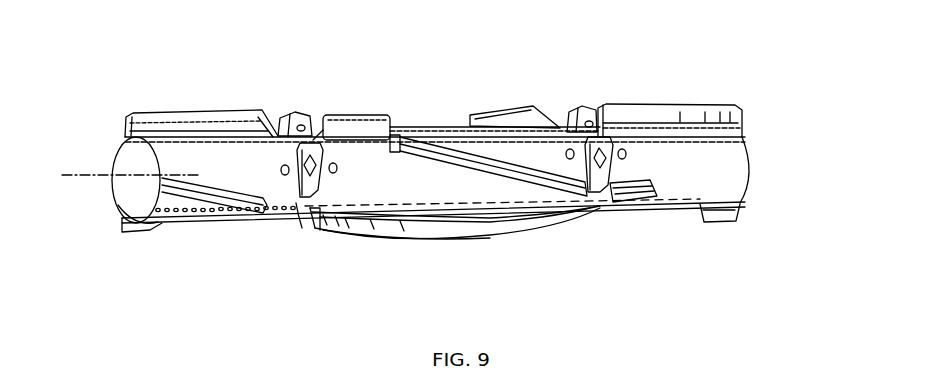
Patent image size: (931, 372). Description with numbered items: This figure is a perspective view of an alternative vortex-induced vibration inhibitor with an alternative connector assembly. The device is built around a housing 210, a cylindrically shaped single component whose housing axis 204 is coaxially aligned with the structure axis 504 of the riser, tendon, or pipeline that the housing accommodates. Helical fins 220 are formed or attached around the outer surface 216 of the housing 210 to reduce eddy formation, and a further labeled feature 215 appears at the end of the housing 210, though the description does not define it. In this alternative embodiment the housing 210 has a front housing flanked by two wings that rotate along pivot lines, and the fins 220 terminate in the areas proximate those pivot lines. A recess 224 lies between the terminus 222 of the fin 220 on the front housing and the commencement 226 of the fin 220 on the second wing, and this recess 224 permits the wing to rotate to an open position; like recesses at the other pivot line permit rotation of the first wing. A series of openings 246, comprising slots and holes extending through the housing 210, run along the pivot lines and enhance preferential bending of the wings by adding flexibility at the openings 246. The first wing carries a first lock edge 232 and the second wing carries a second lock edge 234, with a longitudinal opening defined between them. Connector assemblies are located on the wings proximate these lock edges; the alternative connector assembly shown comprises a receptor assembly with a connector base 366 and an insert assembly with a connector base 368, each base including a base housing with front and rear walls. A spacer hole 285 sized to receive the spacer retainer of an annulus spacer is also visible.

The housing axis 204 is at (91, 178).
The housing 210 is at (732, 162).
The end portion 215 is at (125, 192).
The outer surface 216 is at (162, 143).
The fin 220 is at (200, 122).
The terminus 222 is at (312, 220).
The recess 224 is at (296, 228).
The commencement 226 is at (277, 211).
The first lock edge 232 is at (467, 142).
The second lock edge 234 is at (748, 140).
The openings 246 is at (193, 213).
The spacer hole 285 is at (628, 150).
The connector base 366 is at (300, 113).
The connector base 368 is at (300, 197).
The structure axis 504 is at (107, 180).